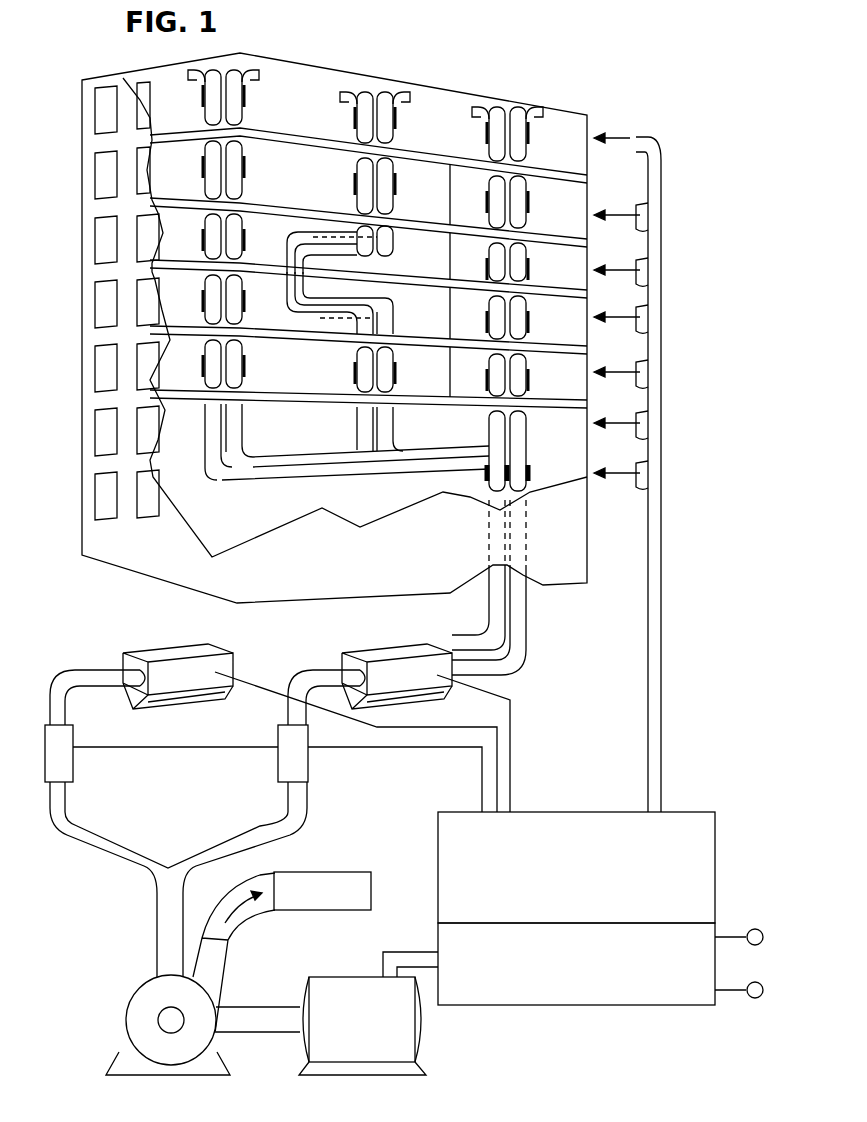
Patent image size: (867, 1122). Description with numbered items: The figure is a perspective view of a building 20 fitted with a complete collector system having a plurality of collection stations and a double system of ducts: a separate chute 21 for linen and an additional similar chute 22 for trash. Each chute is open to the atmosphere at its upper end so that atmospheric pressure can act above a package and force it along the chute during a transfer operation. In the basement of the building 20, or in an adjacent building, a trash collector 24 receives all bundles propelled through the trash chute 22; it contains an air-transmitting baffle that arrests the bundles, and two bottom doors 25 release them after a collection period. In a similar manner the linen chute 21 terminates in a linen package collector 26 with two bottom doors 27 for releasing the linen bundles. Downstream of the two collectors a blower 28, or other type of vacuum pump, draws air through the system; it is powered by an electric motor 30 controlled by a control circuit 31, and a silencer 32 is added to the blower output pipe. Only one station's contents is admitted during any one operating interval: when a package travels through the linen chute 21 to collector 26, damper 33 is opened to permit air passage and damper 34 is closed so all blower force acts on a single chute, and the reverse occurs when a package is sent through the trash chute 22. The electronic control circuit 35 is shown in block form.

The building 20 is at (100, 146).
The linen chute 21 is at (212, 107).
The trash chute 22 is at (245, 92).
The trash collector 24 is at (153, 648).
The bottom doors 25 is at (173, 702).
The linen package collector 26 is at (392, 653).
The bottom doors 27 is at (407, 704).
The blower 28 is at (135, 1020).
The electric motor 30 is at (335, 987).
The control circuit 31 is at (648, 988).
The silencer 32 is at (340, 882).
The linen damper 33 is at (303, 770).
The trash damper 34 is at (65, 767).
The electronic control circuit 35 is at (688, 820).